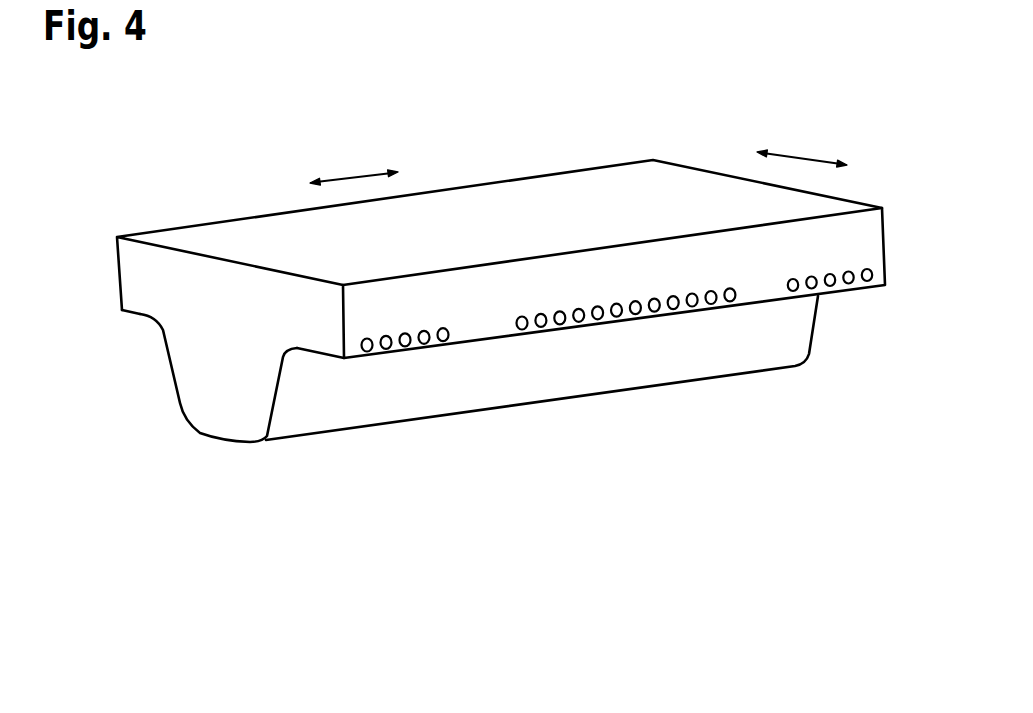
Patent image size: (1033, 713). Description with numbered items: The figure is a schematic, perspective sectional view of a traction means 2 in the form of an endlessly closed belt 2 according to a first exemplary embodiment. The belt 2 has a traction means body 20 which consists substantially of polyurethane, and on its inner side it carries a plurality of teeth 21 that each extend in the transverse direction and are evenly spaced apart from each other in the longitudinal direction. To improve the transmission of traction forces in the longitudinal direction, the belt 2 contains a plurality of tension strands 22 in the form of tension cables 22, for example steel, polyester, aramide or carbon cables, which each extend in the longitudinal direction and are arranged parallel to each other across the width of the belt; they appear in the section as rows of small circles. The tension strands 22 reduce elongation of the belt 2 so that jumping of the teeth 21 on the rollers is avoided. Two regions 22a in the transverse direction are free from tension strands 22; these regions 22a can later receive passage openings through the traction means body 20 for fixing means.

The traction means 2 is at (160, 171).
The traction means body 20 is at (138, 270).
The teeth 21 is at (213, 393).
The tension strands 22 is at (390, 348).
The regions free from tension strands 22a is at (496, 341).